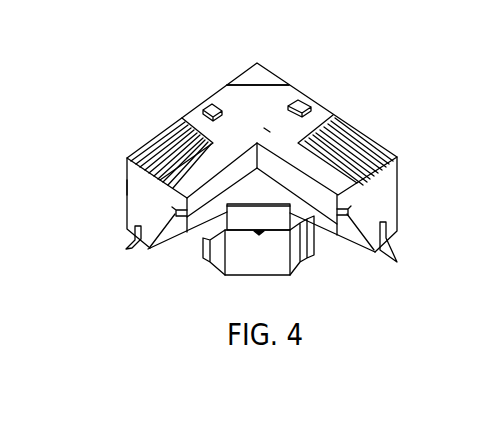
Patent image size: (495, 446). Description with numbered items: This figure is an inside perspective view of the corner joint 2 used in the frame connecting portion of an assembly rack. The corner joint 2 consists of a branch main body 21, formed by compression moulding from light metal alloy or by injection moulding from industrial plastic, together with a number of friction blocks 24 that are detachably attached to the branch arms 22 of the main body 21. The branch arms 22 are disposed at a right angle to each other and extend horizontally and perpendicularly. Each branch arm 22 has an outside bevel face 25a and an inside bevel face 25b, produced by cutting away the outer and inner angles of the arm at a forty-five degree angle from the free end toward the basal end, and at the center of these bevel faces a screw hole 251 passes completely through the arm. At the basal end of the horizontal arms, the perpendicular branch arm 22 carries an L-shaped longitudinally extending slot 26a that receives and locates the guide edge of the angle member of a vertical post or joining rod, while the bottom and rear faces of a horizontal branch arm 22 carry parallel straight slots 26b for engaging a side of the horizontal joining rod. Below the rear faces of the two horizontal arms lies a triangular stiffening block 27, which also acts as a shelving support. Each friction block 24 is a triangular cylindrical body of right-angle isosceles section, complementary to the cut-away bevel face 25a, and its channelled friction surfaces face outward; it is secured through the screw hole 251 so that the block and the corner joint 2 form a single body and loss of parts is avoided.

The corner joint 2 is at (183, 268).
The branch main body 21 is at (310, 245).
The branch arm 22 is at (128, 213).
The friction block 24 is at (270, 76).
The outside bevel face 25a is at (247, 84).
The inside bevel face 25b is at (170, 250).
The L-shaped longitudinally extending slot 26a is at (204, 108).
The parallel straight slot 26b is at (134, 247).
The triangular stiffening block 27 is at (267, 130).
The screw hole 251 is at (272, 266).